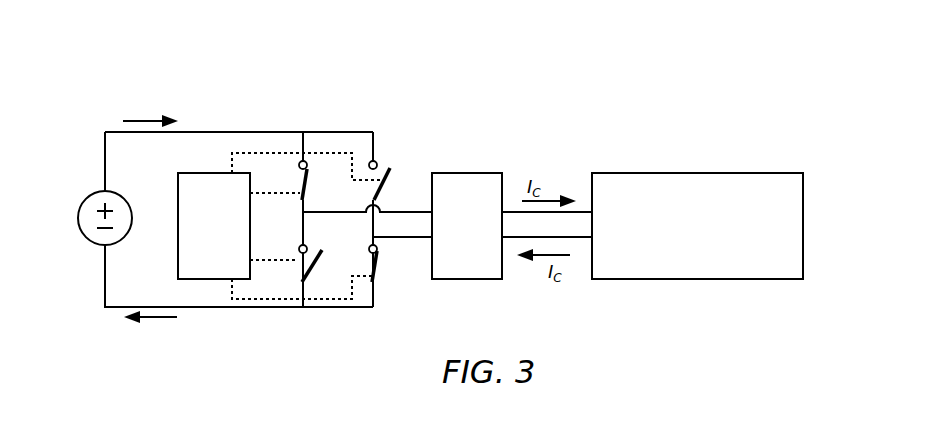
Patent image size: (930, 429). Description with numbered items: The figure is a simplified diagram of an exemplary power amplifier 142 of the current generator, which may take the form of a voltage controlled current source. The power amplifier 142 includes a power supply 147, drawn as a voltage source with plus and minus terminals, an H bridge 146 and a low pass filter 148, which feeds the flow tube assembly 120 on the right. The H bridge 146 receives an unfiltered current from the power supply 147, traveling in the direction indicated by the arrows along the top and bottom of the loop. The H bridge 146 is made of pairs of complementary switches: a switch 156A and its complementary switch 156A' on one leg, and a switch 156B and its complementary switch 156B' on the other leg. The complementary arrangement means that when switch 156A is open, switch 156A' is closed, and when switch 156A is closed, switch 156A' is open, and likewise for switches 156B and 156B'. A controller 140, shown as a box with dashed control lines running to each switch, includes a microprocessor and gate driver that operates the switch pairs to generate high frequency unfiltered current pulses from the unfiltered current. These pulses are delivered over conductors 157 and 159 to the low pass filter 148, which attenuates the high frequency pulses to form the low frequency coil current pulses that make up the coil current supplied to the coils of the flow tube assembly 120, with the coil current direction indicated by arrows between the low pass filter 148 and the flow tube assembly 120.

The flow tube assembly 120 is at (760, 180).
The controller 140 is at (178, 272).
The power amplifier 142 is at (163, 98).
The H bridge 146 is at (398, 112).
The power supply 147 is at (92, 195).
The low pass filter 148 is at (470, 180).
The switch 156A is at (261, 141).
The switch 156B is at (405, 167).
The complementary switch 156A' is at (277, 303).
The complementary switch 156B' is at (399, 288).
The conductor 157 is at (400, 211).
The conductor 159 is at (400, 237).